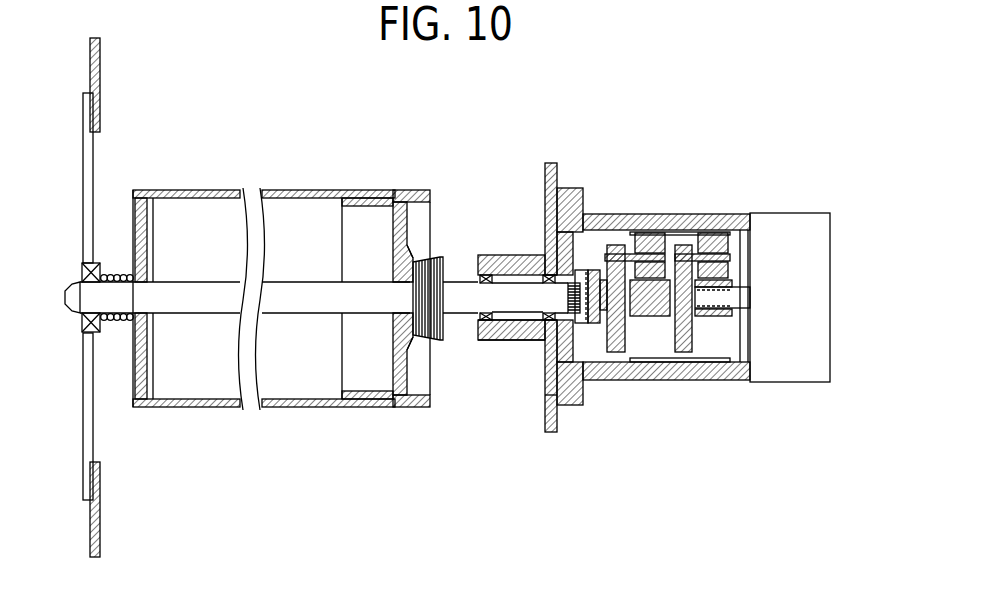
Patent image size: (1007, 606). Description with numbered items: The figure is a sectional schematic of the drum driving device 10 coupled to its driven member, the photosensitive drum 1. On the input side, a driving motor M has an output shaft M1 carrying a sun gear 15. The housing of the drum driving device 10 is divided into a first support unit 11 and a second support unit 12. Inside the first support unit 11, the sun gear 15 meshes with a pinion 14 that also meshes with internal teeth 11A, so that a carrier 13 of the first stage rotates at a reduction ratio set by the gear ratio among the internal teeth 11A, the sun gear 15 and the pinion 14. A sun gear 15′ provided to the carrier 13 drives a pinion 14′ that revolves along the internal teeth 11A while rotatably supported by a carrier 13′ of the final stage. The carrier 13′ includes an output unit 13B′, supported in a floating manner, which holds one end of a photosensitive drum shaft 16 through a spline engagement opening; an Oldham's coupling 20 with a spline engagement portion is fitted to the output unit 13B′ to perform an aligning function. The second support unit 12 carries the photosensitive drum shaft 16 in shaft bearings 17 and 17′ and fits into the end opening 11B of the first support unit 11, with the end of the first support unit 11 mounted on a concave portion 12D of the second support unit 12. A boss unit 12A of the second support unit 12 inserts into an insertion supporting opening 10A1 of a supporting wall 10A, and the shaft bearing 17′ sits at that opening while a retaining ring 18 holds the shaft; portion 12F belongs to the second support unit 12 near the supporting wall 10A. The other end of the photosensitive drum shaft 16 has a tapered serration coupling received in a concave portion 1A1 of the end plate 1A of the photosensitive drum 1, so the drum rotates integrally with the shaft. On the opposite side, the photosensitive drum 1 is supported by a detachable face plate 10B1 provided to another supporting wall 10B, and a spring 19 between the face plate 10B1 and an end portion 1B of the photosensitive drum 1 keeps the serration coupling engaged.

The drum driving device 10 is at (647, 112).
The supporting wall 10A is at (545, 421).
The insertion supporting opening 10A1 is at (532, 262).
The supporting wall 10B is at (90, 60).
The face plate 10B1 is at (83, 193).
The photosensitive drum 1 is at (284, 190).
The end plate 1A is at (410, 190).
The concave portion 1A1 is at (415, 330).
The end portion 1B is at (140, 190).
The photosensitive drum shaft 16 is at (462, 280).
The shaft bearing 17 is at (82, 322).
The shaft bearing 17′ is at (545, 320).
The retaining ring 18 is at (555, 293).
The spring 19 is at (115, 322).
The second support unit 12 is at (494, 255).
The boss unit 12A is at (490, 340).
The concave portion 12D is at (572, 221).
The housing fixing portion 12F is at (550, 397).
The first support unit 11 is at (633, 214).
The internal teeth 11A is at (697, 232).
The end opening 11B is at (582, 382).
The carrier 13 is at (684, 352).
The carrier 13′ is at (616, 352).
The output unit 13B′ is at (590, 280).
The pinion 14 is at (722, 233).
The pinion 14′ is at (660, 233).
The sun gear 15 is at (712, 316).
The sun gear 15′ is at (652, 316).
The Oldham's coupling 20 is at (592, 322).
The driving motor M is at (832, 248).
The output shaft M1 is at (740, 297).